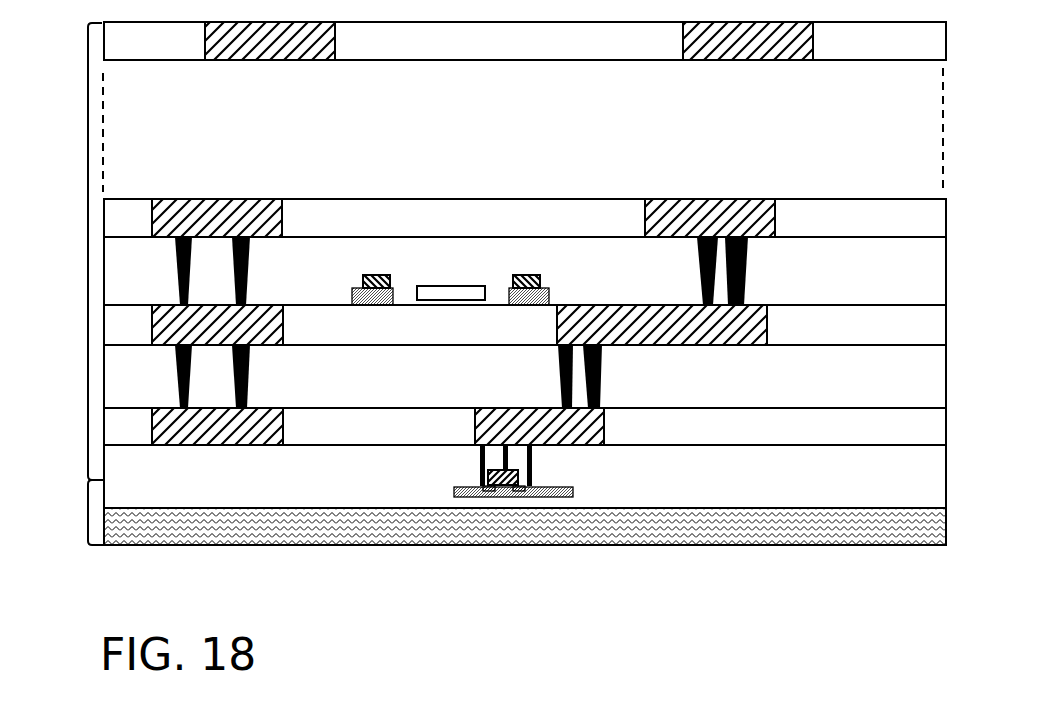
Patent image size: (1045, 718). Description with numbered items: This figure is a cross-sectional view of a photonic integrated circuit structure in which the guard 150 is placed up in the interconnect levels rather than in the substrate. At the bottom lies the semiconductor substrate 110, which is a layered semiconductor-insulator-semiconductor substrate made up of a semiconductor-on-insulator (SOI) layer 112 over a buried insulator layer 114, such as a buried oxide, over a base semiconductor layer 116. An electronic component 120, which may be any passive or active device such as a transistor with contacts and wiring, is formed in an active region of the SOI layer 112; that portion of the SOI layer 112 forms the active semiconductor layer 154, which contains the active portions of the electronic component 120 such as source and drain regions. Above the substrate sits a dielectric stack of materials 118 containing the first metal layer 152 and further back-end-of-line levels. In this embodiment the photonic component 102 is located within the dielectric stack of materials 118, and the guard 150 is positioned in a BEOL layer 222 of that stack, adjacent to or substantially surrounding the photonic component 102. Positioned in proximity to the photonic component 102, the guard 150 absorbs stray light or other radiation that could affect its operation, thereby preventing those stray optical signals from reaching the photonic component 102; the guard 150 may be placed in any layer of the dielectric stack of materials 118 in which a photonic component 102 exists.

The photonic component 102 is at (461, 293).
The semiconductor substrate 110 is at (88, 514).
The semiconductor-on-insulator (SOI) layer 112 is at (469, 557).
The buried insulator layer 114 is at (487, 505).
The base semiconductor layer 116 is at (128, 528).
The dielectric stack of materials 118 is at (88, 253).
The electronic component 120 is at (518, 501).
The guard 150 is at (537, 258).
The first metal layer 152 is at (597, 447).
The active semiconductor layer 154 is at (457, 495).
The BEOL layer 222 is at (358, 252).